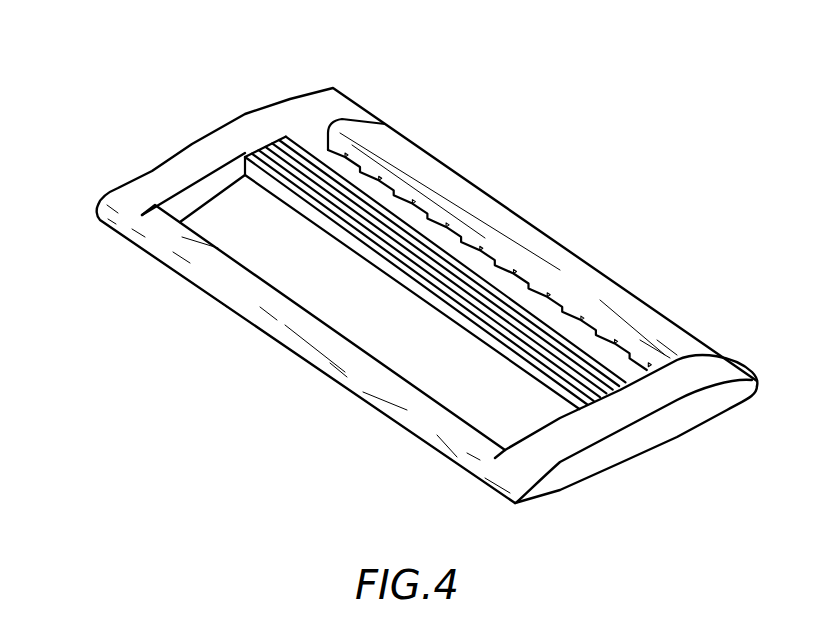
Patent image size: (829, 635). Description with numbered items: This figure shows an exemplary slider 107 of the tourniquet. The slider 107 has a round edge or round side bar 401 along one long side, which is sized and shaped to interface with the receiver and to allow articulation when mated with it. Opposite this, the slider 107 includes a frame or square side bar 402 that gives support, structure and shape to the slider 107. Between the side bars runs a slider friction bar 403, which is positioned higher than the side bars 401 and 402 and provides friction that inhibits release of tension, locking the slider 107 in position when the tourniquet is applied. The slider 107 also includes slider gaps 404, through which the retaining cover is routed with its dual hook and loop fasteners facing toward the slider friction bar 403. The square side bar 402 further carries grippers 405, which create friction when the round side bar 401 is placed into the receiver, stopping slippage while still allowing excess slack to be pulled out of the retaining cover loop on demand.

The slider 107 is at (403, 542).
The round edge 401 is at (175, 236).
The frame 402 is at (415, 158).
The slider friction bar 403 is at (493, 293).
The slider gaps 404 is at (223, 223).
The grippers 405 is at (603, 338).